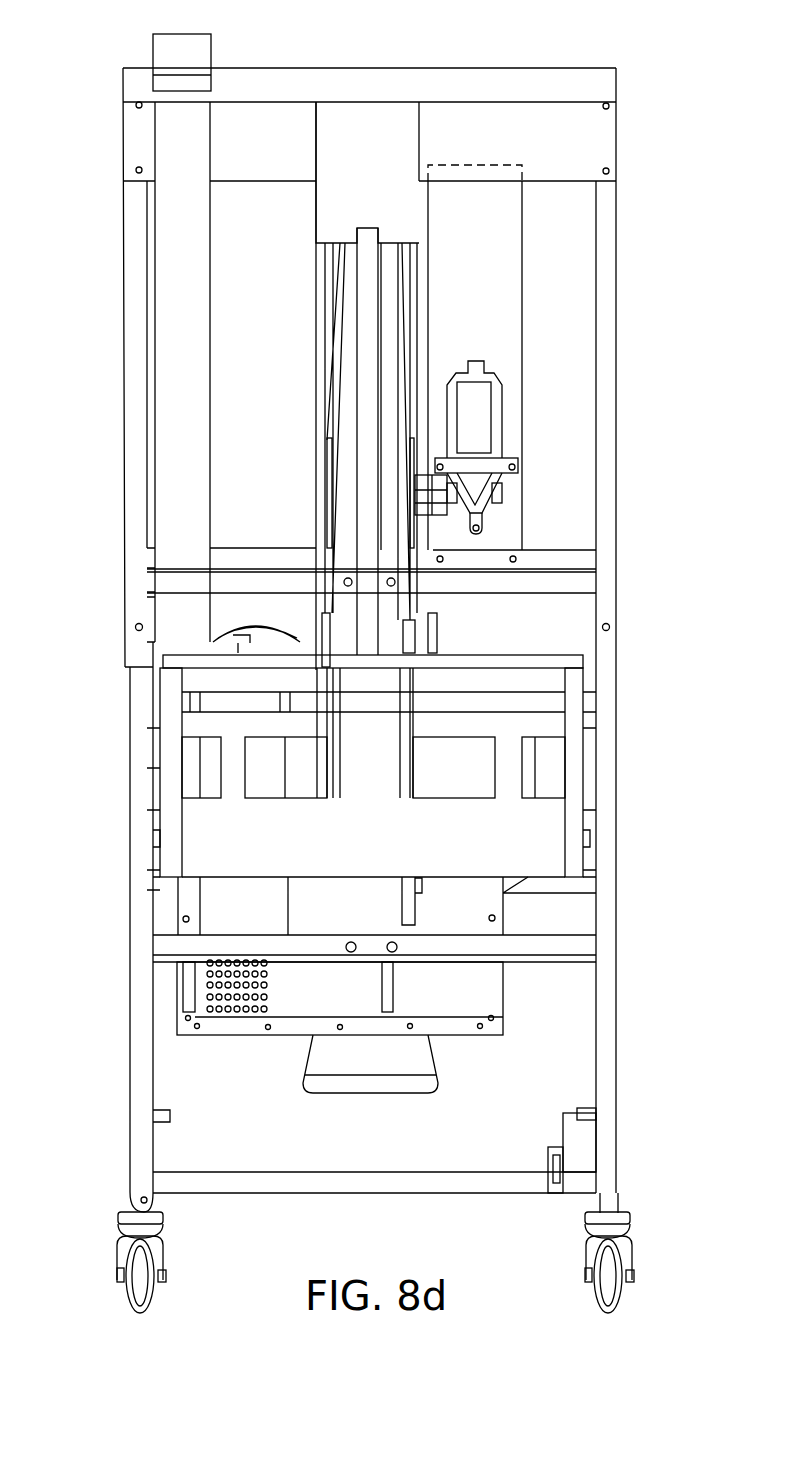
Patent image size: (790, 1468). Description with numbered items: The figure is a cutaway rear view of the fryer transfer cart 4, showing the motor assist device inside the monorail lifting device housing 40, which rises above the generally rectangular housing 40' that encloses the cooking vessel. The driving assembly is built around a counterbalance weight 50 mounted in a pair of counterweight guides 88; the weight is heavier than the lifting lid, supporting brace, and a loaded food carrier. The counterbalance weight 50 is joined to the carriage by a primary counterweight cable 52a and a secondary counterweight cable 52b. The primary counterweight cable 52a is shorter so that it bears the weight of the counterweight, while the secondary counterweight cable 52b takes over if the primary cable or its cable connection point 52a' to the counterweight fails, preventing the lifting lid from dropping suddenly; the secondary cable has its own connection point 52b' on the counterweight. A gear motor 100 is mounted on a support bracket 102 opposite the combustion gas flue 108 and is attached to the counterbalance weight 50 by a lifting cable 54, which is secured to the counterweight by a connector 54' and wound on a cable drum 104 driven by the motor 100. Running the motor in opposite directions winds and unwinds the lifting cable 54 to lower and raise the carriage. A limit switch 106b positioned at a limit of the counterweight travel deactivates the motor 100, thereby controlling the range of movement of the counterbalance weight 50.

The fryer transfer cart 4 is at (84, 900).
The monorail lifting device housing 40 is at (104, 367).
The housing 40' is at (104, 977).
The counterbalance weight 50 is at (550, 797).
The primary counterweight cable 52a is at (451, 431).
The cable connection point 52a' is at (469, 636).
The secondary counterweight cable 52b is at (285, 428).
The secondary cable connection point 52b' is at (271, 584).
The lifting cable 54 is at (371, 441).
The connector 54' is at (473, 626).
The counterweight guides 88 is at (155, 768).
The gear motor 100 is at (503, 413).
The support bracket 102 is at (503, 492).
The cable drum 104 is at (442, 515).
The limit switch 106b is at (563, 1160).
The combustion gas flue 108 is at (168, 255).